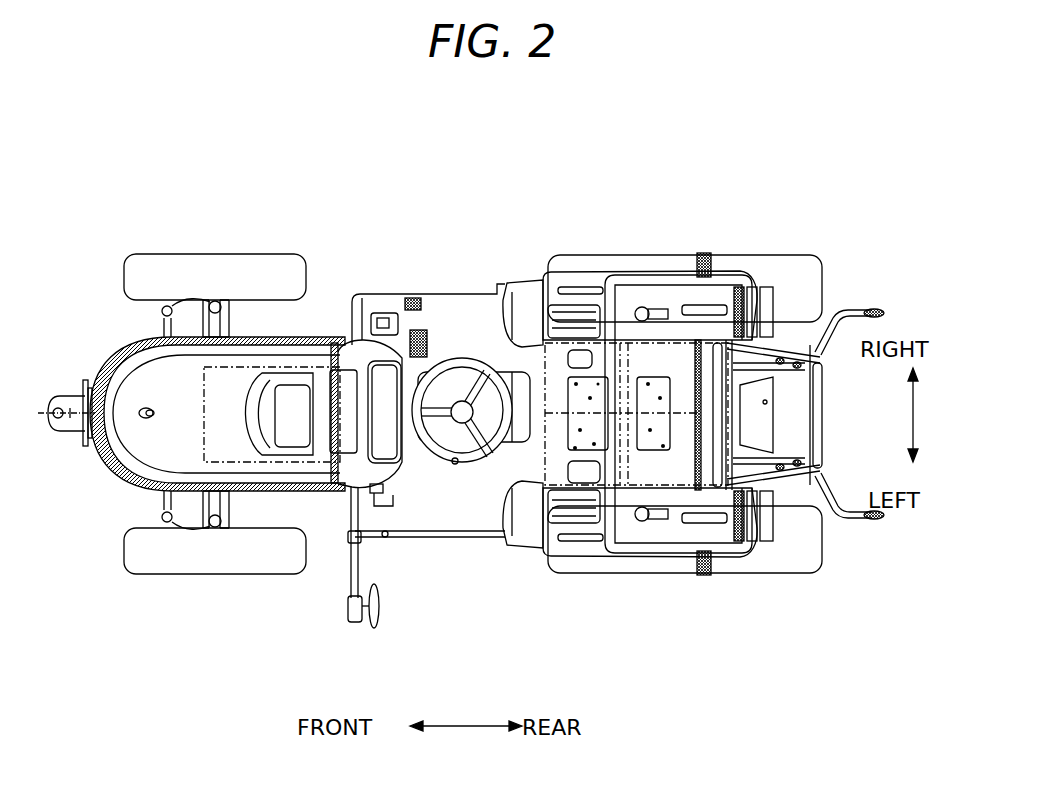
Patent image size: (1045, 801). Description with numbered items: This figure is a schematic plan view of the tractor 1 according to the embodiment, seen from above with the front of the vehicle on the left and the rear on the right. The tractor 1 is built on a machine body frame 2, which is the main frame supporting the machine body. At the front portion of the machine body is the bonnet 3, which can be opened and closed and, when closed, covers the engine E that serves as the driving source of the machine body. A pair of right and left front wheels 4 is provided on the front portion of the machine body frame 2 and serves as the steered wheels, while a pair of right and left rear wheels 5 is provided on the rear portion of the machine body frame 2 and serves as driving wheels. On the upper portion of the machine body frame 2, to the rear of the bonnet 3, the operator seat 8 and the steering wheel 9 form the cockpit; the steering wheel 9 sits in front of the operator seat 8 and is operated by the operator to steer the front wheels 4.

The tractor 1 is at (703, 130).
The machine body frame 2 is at (486, 276).
The bonnet 3 is at (336, 332).
The front wheels 4 is at (186, 253).
The rear wheels 5 is at (768, 253).
The operator seat 8 is at (666, 276).
The steering wheel 9 is at (462, 358).
The engine E is at (315, 487).